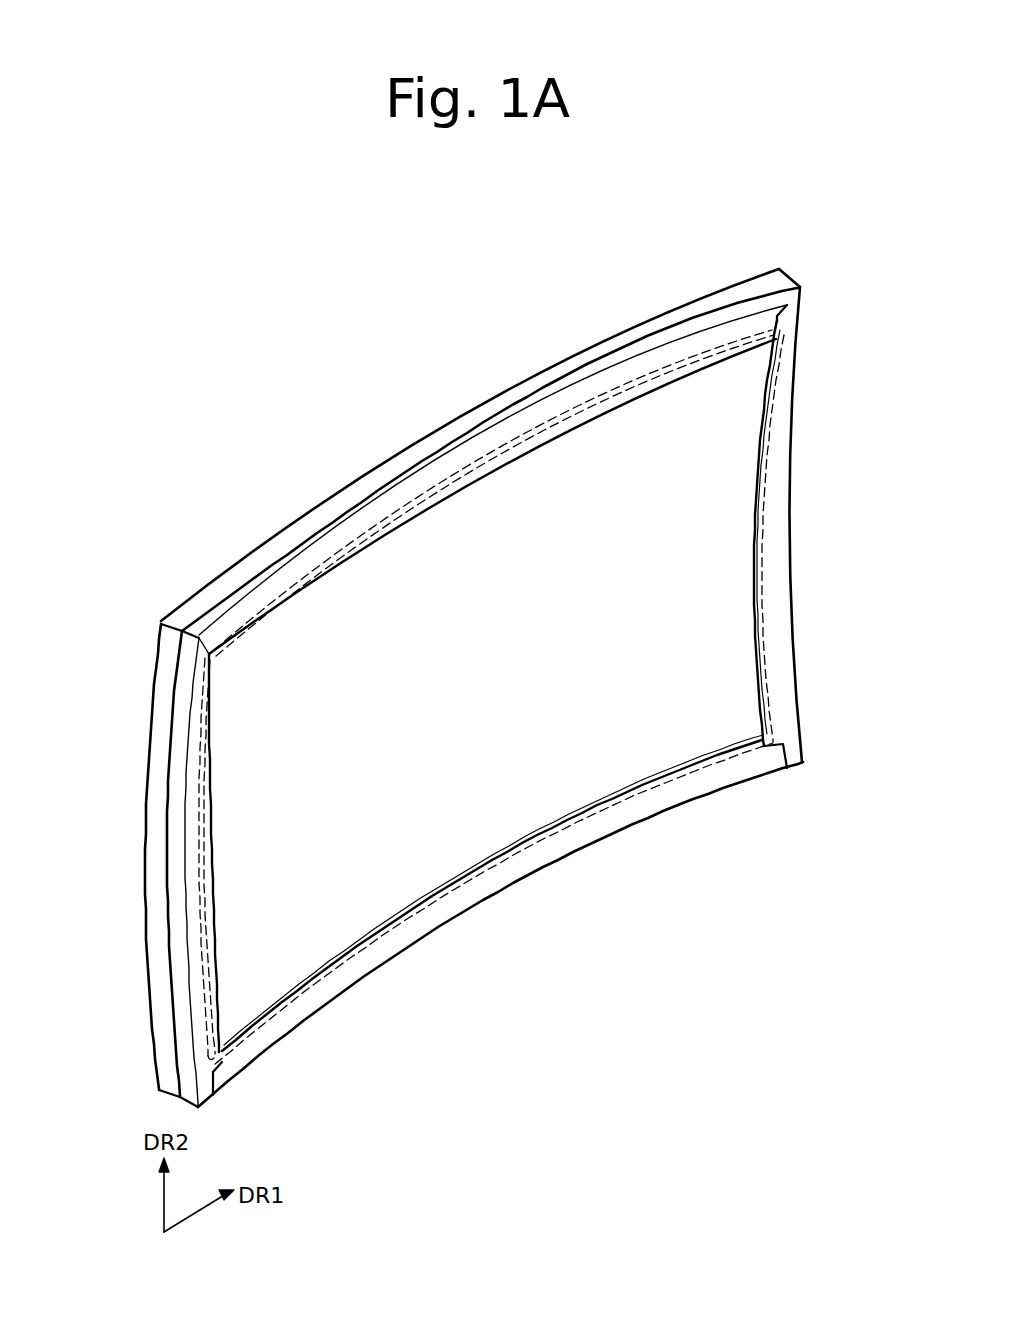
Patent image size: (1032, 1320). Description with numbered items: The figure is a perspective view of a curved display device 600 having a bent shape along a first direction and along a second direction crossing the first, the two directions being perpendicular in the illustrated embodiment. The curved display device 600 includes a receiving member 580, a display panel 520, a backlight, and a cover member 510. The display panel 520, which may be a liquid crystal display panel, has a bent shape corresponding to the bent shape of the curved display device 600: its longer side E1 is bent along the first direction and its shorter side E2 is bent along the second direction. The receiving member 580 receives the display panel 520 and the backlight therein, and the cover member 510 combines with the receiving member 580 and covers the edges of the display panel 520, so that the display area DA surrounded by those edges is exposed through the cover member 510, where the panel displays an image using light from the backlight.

The curved display device 600 is at (474, 651).
The receiving member 580 is at (562, 368).
The cover member 510 is at (780, 467).
The display panel 520 is at (474, 697).
The longer side E1 is at (447, 482).
The shorter side E2 is at (200, 853).
The display area DA is at (485, 784).